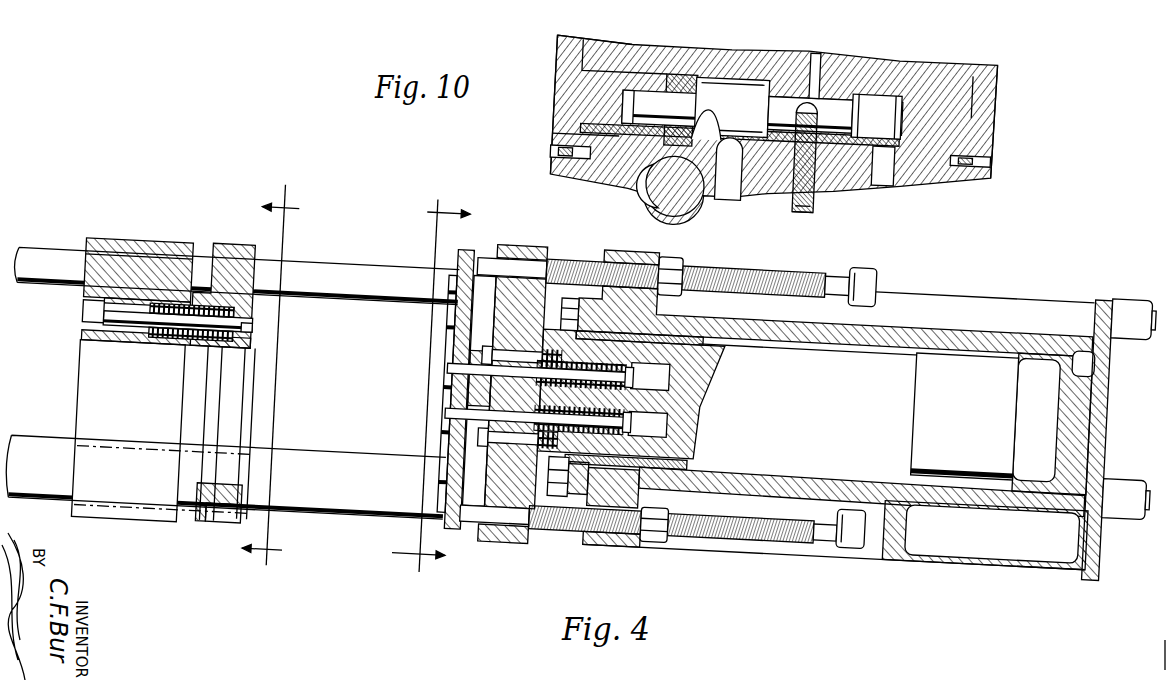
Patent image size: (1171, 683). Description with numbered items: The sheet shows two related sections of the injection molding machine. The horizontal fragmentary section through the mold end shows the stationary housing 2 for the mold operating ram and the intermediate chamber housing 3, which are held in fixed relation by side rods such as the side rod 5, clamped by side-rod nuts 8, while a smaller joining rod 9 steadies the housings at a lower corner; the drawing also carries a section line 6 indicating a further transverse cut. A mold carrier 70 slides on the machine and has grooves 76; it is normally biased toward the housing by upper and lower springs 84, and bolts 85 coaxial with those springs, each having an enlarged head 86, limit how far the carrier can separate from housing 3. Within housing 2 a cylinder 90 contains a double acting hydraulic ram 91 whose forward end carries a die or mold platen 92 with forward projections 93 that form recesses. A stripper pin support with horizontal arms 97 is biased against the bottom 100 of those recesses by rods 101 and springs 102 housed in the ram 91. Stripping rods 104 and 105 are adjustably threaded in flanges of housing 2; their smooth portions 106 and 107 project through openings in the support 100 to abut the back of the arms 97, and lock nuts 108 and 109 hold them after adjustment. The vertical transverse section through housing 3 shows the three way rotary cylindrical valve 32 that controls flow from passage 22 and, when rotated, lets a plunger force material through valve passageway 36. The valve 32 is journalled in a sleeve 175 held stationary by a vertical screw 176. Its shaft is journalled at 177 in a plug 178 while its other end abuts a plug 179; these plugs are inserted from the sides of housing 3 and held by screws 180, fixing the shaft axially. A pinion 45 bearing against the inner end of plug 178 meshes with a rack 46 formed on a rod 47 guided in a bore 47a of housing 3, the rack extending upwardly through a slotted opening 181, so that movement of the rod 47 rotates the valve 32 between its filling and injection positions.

In FIG. 4, the stationary housing 2 is at (982, 263).
In FIG. 10, the intermediate stationary chamber housing 3 is at (656, 36).
In FIG. 4, the intermediate stationary chamber housing 3 is at (147, 247).
In FIG. 4, the side rod 5 is at (320, 468).
In FIG. 4, the section line 6- 6 is at (430, 387).
In FIG. 4, the side-rod nuts 8 is at (1127, 314).
In FIG. 4, the third joining rod 9 is at (350, 277).
In FIG. 10, the passage 22 is at (818, 68).
In FIG. 10, the three way rotary cylindrical valve 32 is at (843, 105).
In FIG. 10, the valve passageway 36 is at (794, 150).
In FIG. 10, the pinion 45 is at (681, 78).
In FIG. 10, the rack 46 is at (690, 175).
In FIG. 10, the rod 47 is at (648, 193).
In FIG. 10, the bore 47a is at (665, 205).
In FIG. 4, the mold carrier 70 is at (239, 247).
In FIG. 4, the grooves 76 is at (211, 500).
In FIG. 4, the springs 84 is at (192, 356).
In FIG. 4, the bolts 85 is at (128, 352).
In FIG. 4, the enlarged head 86 is at (79, 334).
In FIG. 4, the cylinder 90 is at (903, 312).
In FIG. 4, the double acting hydraulic ram 91 is at (988, 338).
In FIG. 4, the die or mold platen 92 is at (544, 228).
In FIG. 4, the forward projections 93 is at (443, 353).
In FIG. 4, the horizontal arms 97 is at (451, 333).
In FIG. 4, the bottom of recesses 100 is at (484, 330).
In FIG. 4, the rods 101 is at (490, 374).
In FIG. 4, the springs 102 is at (692, 393).
In FIG. 4, the rod 104 is at (732, 261).
In FIG. 4, the rod 105 is at (713, 536).
In FIG. 4, the smooth portion 106 is at (504, 262).
In FIG. 4, the smooth portion 107 is at (511, 538).
In FIG. 4, the lock nut 108 is at (682, 253).
In FIG. 4, the lock nut 109 is at (655, 546).
In FIG. 10, the sleeve 175 is at (878, 183).
In FIG. 10, the vertical screw 176 is at (812, 205).
In FIG. 10, the journal 177 is at (628, 117).
In FIG. 10, the plug 178 is at (576, 79).
In FIG. 10, the plug 179 is at (985, 117).
In FIG. 10, the bolts or screws 180 is at (552, 158).
In FIG. 10, the slotted opening 181 is at (700, 136).